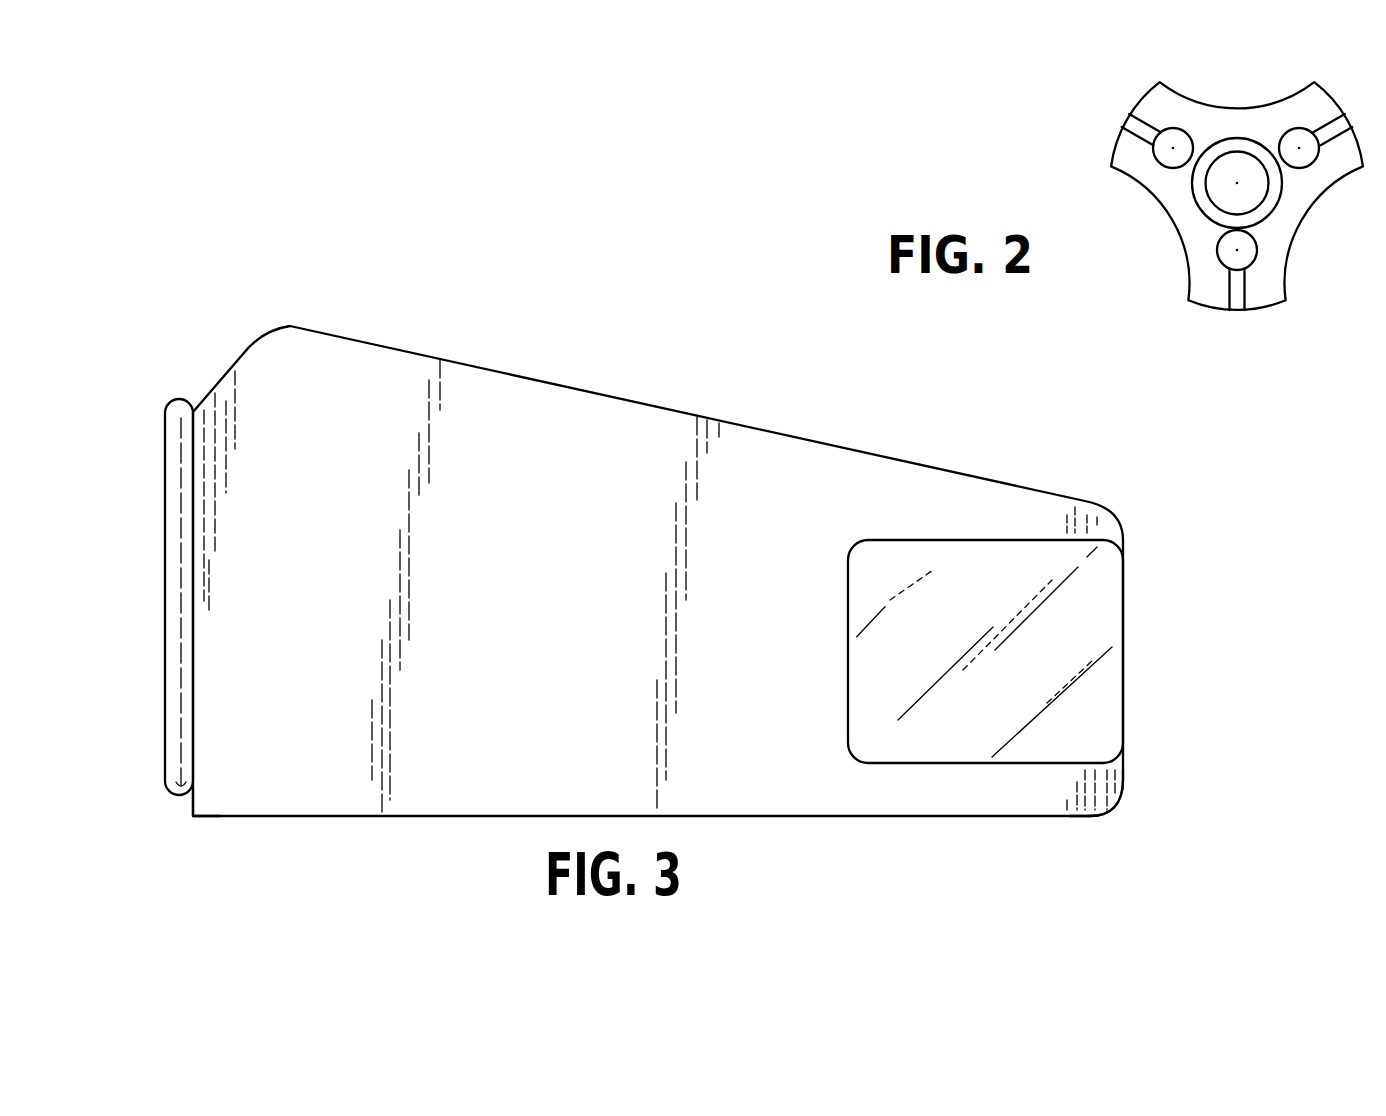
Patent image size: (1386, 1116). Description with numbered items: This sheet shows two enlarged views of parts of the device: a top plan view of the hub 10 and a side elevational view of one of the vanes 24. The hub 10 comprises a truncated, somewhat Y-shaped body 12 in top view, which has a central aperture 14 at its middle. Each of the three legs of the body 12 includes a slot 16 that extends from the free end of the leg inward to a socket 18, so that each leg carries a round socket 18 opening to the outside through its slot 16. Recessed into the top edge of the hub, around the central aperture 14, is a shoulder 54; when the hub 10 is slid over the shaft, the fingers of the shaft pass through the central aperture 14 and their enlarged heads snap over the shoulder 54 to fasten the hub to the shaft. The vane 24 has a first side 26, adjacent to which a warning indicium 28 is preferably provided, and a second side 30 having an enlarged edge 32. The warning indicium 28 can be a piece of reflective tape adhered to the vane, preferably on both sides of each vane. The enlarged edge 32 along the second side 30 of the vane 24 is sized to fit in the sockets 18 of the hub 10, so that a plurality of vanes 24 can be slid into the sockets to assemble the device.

In FIG. 2, the hub 10 is at (1252, 105).
In FIG. 2, the body 12 is at (1182, 215).
In FIG. 2, the central aperture 14 is at (1266, 181).
In FIG. 2, the slot 16 is at (1244, 289).
In FIG. 2, the socket 18 is at (1250, 252).
In FIG. 2, the shoulder 54 is at (1226, 158).
In FIG. 3, the vane 24 is at (887, 820).
In FIG. 3, the first side 26 is at (1125, 778).
In FIG. 3, the warning indicium 28 is at (1097, 638).
In FIG. 3, the second side 30 is at (190, 808).
In FIG. 3, the enlarged edge 32 is at (181, 403).